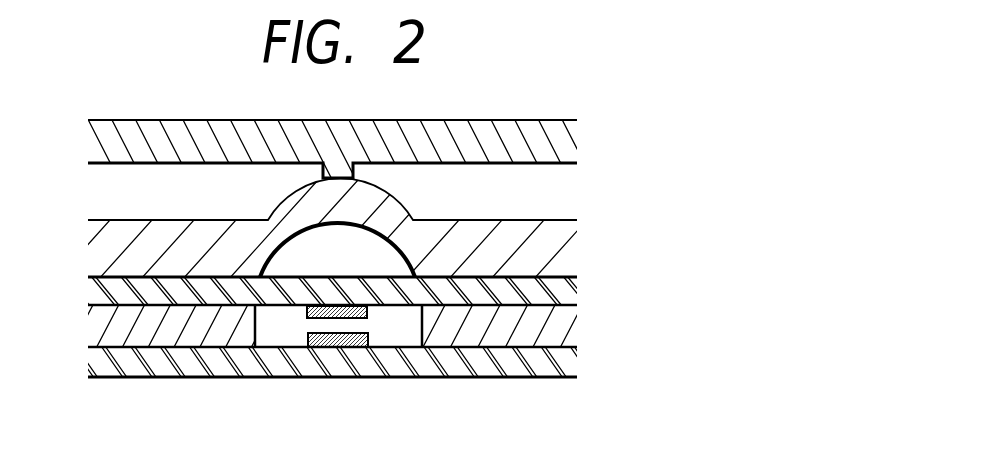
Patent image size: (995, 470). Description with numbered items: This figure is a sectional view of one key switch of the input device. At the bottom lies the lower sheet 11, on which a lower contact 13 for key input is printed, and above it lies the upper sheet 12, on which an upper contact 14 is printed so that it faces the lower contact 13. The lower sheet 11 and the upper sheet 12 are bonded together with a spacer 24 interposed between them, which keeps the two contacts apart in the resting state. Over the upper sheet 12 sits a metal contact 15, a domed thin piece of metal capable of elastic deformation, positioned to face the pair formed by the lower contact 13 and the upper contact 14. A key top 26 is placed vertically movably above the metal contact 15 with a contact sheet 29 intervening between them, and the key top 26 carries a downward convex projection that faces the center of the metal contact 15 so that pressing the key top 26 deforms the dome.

The key top 26 is at (563, 140).
The contact sheet 29 is at (572, 238).
The metal contact 15 is at (325, 225).
The upper sheet 12 is at (563, 293).
The spacer 24 is at (125, 330).
The lower sheet 11 is at (567, 360).
The upper contact 14 is at (305, 312).
The lower contact 13 is at (370, 340).